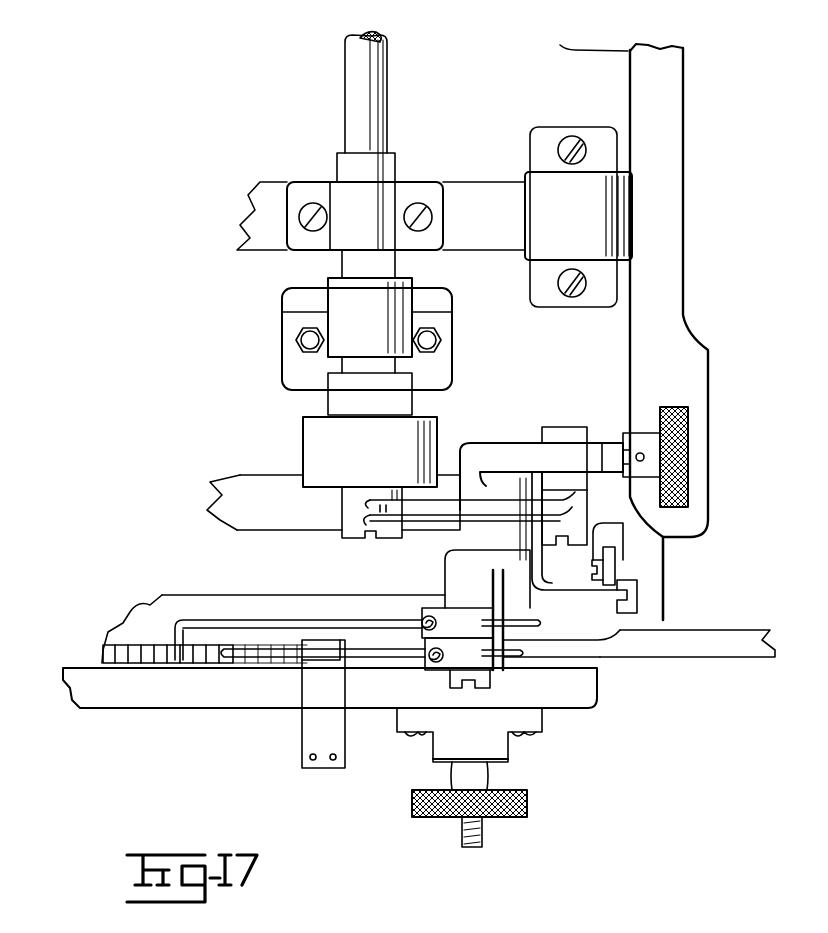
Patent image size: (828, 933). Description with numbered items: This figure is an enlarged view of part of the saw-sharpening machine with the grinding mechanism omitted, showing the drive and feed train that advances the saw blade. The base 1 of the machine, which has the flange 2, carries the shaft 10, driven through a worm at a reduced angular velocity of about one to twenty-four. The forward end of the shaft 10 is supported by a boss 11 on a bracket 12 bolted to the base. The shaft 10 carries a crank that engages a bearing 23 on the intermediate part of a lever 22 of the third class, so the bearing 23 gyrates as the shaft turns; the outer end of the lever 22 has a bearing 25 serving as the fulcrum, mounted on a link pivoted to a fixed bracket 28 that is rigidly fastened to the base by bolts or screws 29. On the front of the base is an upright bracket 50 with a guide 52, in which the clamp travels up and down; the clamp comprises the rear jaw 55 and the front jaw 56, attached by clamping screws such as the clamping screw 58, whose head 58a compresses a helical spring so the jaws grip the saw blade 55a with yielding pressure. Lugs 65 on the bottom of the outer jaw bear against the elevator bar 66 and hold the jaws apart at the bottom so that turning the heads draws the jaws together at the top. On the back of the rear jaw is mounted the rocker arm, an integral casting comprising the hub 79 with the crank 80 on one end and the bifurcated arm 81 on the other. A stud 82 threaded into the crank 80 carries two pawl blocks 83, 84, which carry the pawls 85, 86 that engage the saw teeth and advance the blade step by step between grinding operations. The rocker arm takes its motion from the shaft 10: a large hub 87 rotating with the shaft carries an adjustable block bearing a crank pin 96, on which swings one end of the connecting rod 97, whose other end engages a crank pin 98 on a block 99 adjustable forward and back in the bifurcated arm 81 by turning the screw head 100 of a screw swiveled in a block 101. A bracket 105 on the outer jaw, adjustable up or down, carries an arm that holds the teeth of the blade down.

The base 1 is at (583, 63).
The flange 2 is at (697, 368).
The shaft 10 is at (388, 52).
The boss 11 is at (398, 316).
The bracket 12 is at (443, 372).
The lever 22 is at (478, 186).
The bearing 23 is at (385, 196).
The bearing 25 is at (626, 212).
The fixed bracket 28 is at (606, 148).
The bolts or screws 29 is at (575, 146).
The upright bracket 50 is at (664, 553).
The guide 52 is at (640, 590).
The rear jaw 55 is at (600, 648).
The saw blade 55a is at (182, 668).
The front jaw 56 is at (560, 706).
The clamping screw 58 is at (476, 848).
The screw head 58a is at (528, 803).
The lugs 65 is at (592, 684).
The elevator bar 66 is at (740, 660).
The hub 79 is at (472, 498).
The crank 80 is at (444, 572).
The bifurcated arm 81 is at (532, 448).
The stud 82 is at (447, 672).
The pawl block 83 is at (424, 666).
The pawl block 84 is at (420, 617).
The pawl 85 is at (256, 660).
The pawl 86 is at (524, 621).
The hub 87 is at (302, 435).
The crank pin 96 is at (356, 534).
The connecting rod 97 is at (440, 512).
The crank pin 98 is at (582, 537).
The block 99 is at (576, 426).
The screw head 100 is at (690, 452).
The block 101 is at (610, 444).
The bracket 105 is at (300, 733).